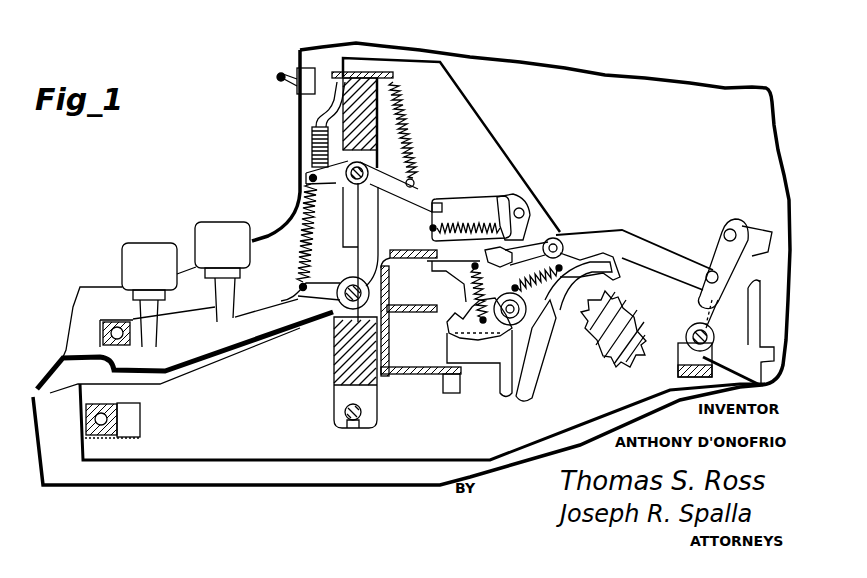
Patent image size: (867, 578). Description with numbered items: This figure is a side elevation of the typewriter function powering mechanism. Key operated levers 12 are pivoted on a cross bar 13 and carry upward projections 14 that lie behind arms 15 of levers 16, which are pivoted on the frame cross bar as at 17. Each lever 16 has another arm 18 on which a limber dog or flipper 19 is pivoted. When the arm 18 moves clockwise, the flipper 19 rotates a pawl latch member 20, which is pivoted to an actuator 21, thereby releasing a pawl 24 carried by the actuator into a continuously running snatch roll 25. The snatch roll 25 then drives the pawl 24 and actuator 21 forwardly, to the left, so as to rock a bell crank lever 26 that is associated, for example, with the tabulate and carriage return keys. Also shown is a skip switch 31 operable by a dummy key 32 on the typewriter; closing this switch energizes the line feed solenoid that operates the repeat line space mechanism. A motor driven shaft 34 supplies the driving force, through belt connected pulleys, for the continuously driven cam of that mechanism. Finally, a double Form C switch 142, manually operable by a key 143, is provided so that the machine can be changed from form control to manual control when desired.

The key operated levers 12 is at (236, 334).
The cross bar 13 is at (372, 380).
The upward projections 14 is at (368, 262).
The arms 15 is at (352, 224).
The levers 16 is at (449, 196).
The frame cross bar pivot 17 is at (409, 288).
The arm 18 is at (478, 198).
The limber dog or flipper 19 is at (531, 195).
The pawl latch member 20 is at (578, 247).
The actuator 21 is at (662, 256).
The pawl 24 is at (546, 331).
The snatch roll 25 is at (616, 354).
The bell crank lever 26 is at (740, 300).
The skip switch 31 is at (131, 424).
The dummy key 32 is at (154, 250).
The motor driven shaft 34 is at (756, 226).
The double Form C switch 142 is at (315, 60).
The key 143 is at (279, 75).